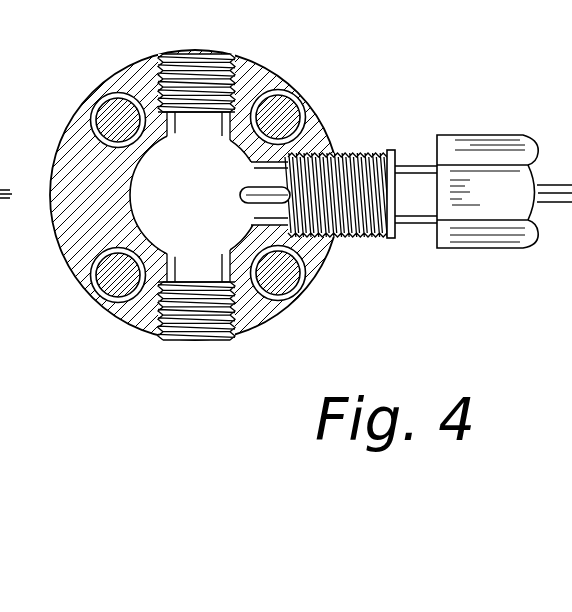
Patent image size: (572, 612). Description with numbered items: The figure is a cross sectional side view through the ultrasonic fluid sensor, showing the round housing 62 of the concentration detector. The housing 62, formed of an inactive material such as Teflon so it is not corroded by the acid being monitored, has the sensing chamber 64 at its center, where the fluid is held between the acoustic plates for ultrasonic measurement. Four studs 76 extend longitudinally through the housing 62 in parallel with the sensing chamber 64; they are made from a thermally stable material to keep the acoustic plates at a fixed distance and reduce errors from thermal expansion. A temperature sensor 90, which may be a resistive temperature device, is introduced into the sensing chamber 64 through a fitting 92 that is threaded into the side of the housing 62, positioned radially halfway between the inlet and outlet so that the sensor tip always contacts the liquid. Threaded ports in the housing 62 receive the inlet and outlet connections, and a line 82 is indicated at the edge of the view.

The housing 62 is at (180, 181).
The sensing chamber 64 is at (214, 178).
The studs 76 is at (303, 107).
The gas line 82 is at (15, 155).
The temperature sensor 90 is at (233, 194).
The fitting 92 is at (363, 157).